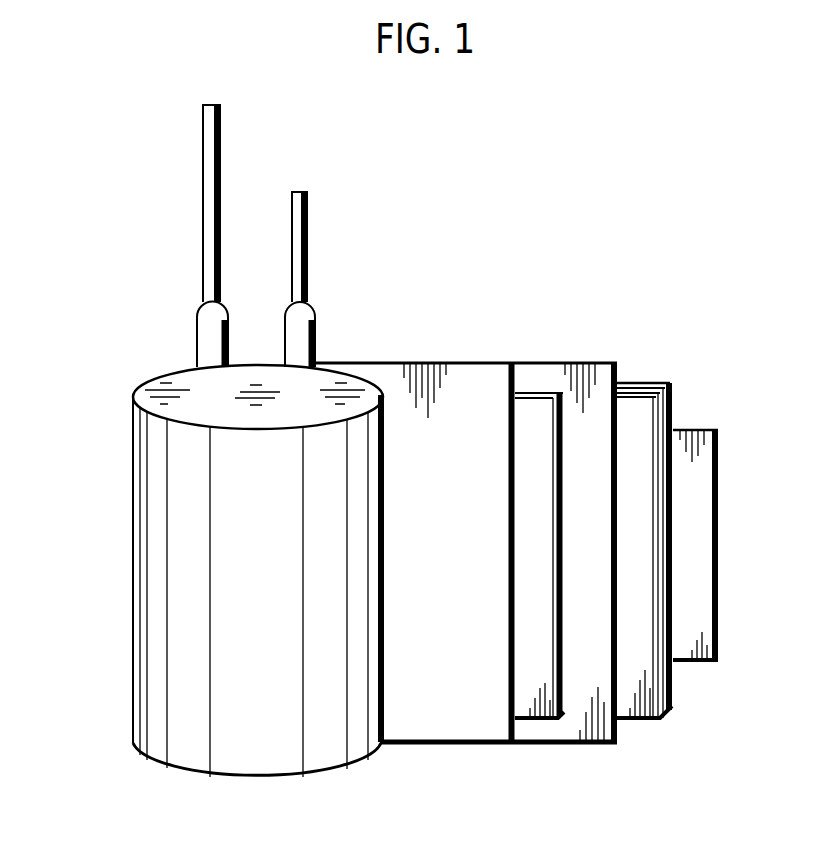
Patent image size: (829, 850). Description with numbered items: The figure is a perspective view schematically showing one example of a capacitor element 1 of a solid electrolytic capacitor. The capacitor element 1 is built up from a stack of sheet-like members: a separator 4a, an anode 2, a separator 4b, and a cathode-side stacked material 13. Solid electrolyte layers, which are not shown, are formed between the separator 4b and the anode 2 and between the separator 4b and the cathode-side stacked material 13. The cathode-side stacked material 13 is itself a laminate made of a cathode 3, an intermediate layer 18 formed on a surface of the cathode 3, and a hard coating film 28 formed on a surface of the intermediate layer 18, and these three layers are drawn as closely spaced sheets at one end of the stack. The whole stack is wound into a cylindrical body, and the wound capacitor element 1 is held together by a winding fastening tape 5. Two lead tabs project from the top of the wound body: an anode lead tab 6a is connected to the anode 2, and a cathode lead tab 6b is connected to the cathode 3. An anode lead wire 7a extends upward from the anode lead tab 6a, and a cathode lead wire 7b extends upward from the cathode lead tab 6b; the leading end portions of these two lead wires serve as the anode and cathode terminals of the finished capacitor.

The capacitor element 1 is at (131, 662).
The anode 2 is at (530, 420).
The cathode 3 is at (617, 292).
The separator 4a is at (448, 727).
The separator 4b is at (573, 722).
The winding fastening tape 5 is at (717, 538).
The anode lead tab 6a is at (205, 325).
The cathode lead tab 6b is at (303, 342).
The anode lead wire 7a is at (205, 153).
The cathode lead wire 7b is at (297, 207).
The cathode-side stacked material 13 is at (702, 473).
The intermediate layer 18 is at (676, 400).
The hard coating film 28 is at (627, 423).